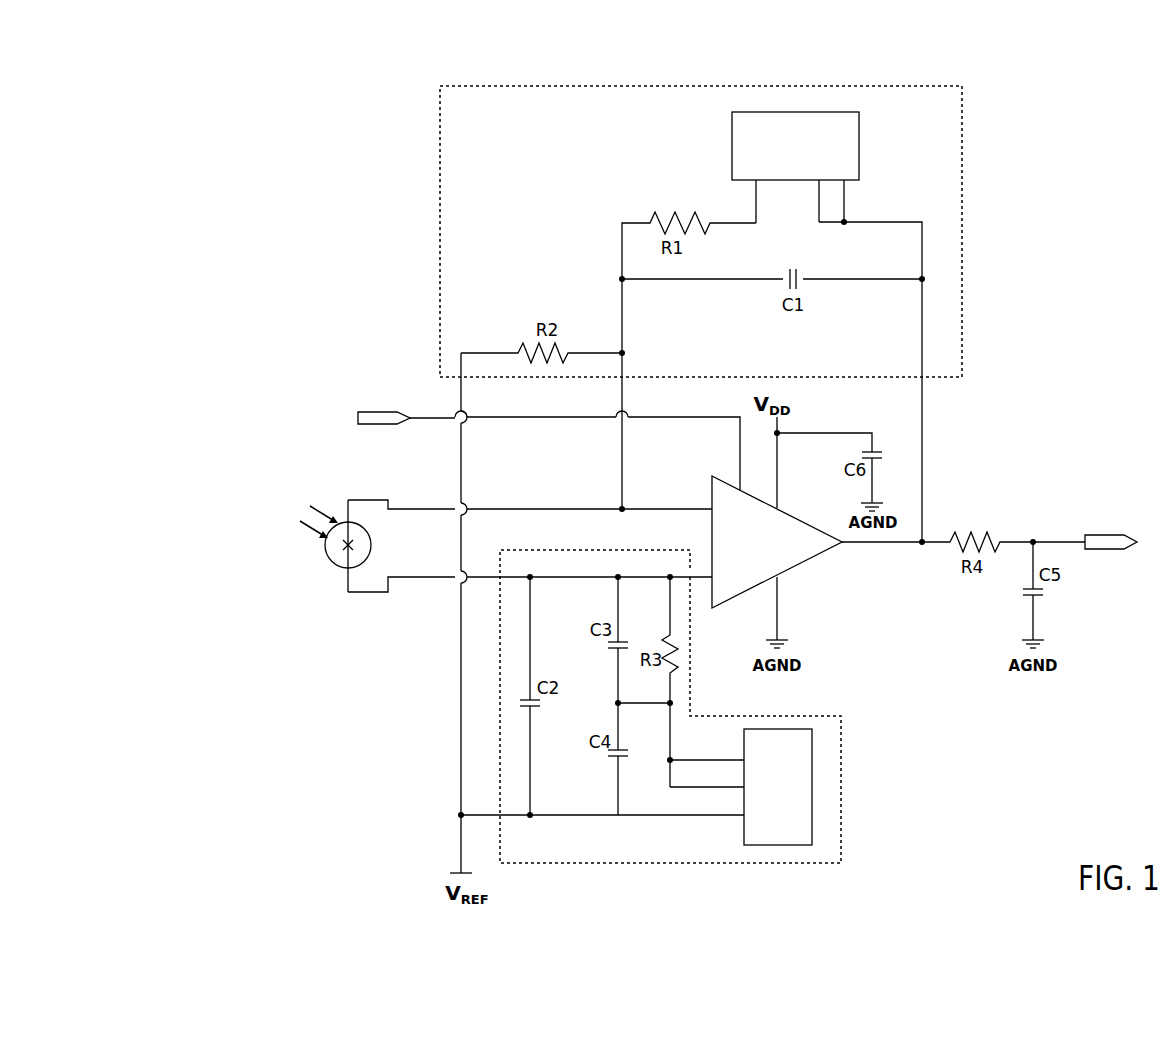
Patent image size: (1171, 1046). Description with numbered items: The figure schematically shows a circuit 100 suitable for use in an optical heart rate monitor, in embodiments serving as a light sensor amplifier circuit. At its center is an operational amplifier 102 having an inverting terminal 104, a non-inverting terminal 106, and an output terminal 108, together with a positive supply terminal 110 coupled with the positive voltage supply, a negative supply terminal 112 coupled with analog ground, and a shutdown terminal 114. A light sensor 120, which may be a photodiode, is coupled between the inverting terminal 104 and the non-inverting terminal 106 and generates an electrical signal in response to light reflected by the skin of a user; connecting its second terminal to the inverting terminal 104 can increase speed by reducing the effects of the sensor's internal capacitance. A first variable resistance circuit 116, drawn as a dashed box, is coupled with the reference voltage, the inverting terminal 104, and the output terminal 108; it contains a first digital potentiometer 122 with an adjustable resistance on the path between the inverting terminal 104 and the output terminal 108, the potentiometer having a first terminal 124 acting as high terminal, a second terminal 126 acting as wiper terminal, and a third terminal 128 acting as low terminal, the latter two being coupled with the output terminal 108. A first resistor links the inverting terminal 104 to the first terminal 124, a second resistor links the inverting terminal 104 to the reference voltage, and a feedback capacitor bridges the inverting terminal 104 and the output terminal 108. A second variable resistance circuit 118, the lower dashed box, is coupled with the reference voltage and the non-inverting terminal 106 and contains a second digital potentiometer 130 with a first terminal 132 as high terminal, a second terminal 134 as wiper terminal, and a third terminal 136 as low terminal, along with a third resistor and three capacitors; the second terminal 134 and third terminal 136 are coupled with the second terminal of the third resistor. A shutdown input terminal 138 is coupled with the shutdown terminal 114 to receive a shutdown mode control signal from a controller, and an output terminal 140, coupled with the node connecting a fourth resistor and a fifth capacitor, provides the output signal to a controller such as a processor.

The circuit 100 is at (328, 128).
The operational amplifier 102 is at (777, 542).
The inverting terminal 104 is at (710, 500).
The non-inverting terminal 106 is at (714, 592).
The output terminal 108 is at (848, 548).
The positive supply terminal 110 is at (779, 505).
The negative supply terminal 112 is at (780, 583).
The shutdown terminal 114 is at (740, 492).
The first variable resistance circuit 116 is at (962, 233).
The second variable resistance circuit 118 is at (841, 765).
The light sensor 120 is at (329, 557).
The first digital potentiometer 122 is at (795, 146).
The first terminal 124 is at (758, 185).
The second terminal 126 is at (817, 186).
The third terminal 128 is at (846, 185).
The second digital potentiometer 130 is at (778, 787).
The first terminal 132 is at (742, 816).
The second terminal 134 is at (743, 785).
The third terminal 136 is at (742, 759).
The shutdown input terminal 138 is at (380, 412).
The output terminal 140 is at (1112, 552).